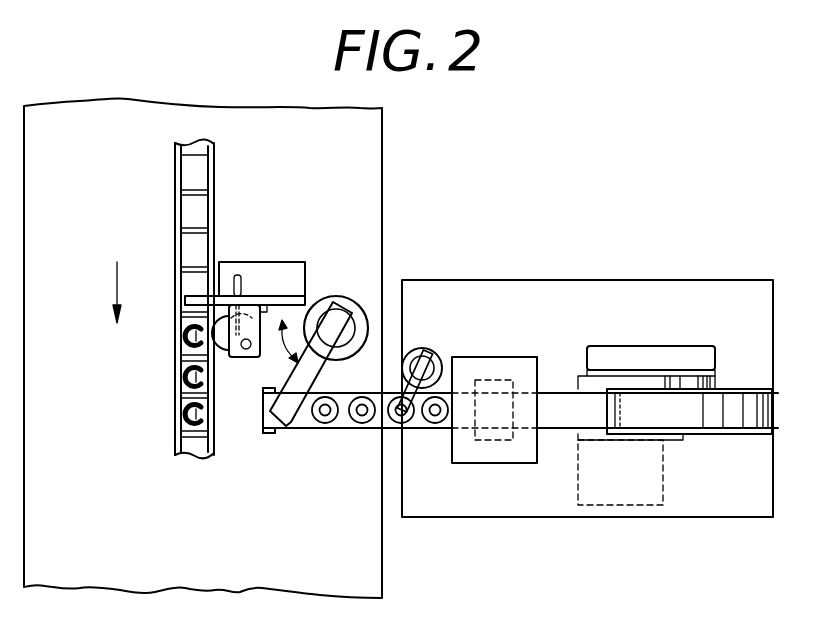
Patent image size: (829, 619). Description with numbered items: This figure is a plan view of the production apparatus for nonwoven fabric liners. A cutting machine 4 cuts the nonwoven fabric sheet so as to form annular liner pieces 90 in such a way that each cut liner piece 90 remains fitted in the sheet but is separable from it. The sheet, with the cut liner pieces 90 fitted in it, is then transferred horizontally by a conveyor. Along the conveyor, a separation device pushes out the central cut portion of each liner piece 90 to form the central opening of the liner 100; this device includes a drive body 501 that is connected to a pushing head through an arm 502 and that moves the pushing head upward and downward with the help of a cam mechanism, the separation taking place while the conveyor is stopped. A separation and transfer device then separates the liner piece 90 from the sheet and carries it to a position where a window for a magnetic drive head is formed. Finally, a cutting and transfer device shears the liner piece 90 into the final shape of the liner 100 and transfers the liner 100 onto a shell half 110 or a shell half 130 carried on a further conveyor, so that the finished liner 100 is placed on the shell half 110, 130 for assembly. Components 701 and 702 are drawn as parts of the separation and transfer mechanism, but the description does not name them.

The shell half 110 is at (152, 298).
The shell half 130 is at (187, 173).
The liner 100 is at (177, 337).
The cam disc 701 is at (346, 302).
The lever 702 is at (325, 312).
The drive body 501 is at (437, 357).
The arm 502 is at (424, 352).
The cutting machine 4 is at (516, 350).
The liner piece 90 is at (433, 432).